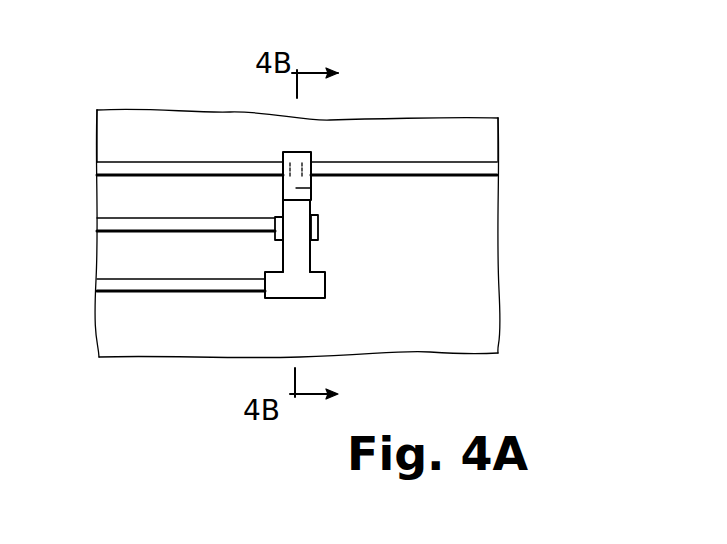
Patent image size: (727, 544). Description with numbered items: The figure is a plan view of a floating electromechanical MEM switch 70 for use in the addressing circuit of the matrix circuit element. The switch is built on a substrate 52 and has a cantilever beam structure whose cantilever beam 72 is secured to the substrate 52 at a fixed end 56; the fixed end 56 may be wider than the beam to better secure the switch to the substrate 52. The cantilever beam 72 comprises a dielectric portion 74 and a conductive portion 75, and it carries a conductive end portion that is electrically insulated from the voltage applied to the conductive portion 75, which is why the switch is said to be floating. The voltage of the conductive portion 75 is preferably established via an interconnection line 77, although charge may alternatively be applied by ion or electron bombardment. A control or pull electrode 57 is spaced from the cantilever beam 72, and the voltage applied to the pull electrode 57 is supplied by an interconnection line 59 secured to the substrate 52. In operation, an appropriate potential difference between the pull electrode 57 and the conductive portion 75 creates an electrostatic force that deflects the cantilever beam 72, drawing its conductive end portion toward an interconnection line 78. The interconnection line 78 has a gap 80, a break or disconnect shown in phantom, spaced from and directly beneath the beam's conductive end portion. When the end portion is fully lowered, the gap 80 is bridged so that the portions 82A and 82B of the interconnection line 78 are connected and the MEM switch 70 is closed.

The substrate 52 is at (472, 313).
The fixed end 56 is at (322, 285).
The pull electrode 57 is at (277, 217).
The interconnection line 59 is at (133, 233).
The MEM switch 70 is at (329, 202).
The cantilever beam 72 is at (280, 258).
The dielectric portion 74 is at (296, 188).
The conductive portion 75 is at (298, 245).
The interconnection line 77 is at (165, 293).
The interconnection line 78 is at (366, 162).
The gap 80 is at (300, 147).
The portion of the interconnection line 82A is at (122, 160).
The portion of the interconnection line 82B is at (432, 162).